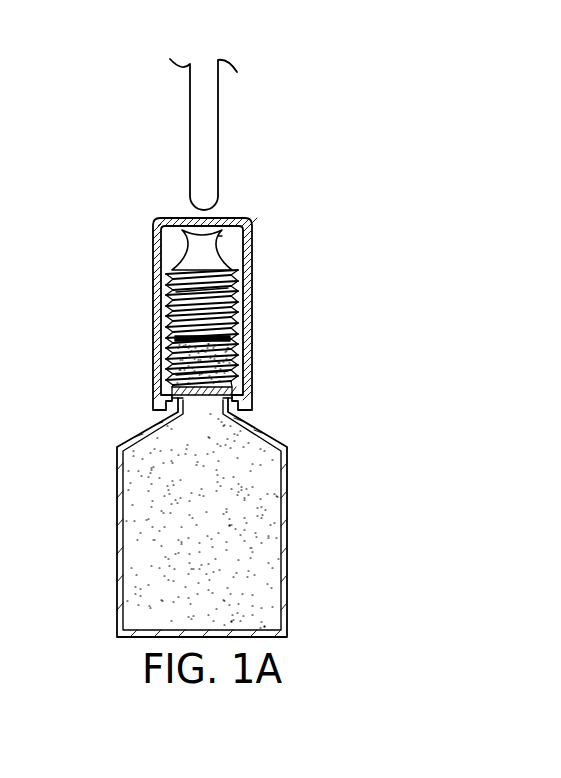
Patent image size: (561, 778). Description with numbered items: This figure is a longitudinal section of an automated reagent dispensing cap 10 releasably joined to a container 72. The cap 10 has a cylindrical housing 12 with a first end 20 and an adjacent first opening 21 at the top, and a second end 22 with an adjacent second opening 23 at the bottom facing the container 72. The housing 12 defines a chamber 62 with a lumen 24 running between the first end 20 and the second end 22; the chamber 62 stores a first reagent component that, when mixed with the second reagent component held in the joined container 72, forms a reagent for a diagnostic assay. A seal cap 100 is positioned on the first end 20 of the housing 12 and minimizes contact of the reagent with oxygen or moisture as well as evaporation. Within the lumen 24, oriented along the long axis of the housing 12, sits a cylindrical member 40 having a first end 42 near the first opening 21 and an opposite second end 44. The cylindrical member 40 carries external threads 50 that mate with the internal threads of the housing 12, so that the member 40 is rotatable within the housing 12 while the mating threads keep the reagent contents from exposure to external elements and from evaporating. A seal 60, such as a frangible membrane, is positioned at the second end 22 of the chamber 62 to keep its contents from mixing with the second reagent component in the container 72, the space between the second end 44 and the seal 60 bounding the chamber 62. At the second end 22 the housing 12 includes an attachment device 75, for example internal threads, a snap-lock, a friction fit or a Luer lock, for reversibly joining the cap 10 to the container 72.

The reagent dispensing cap 10 is at (66, 261).
The seal cap 100 is at (160, 221).
The cylindrical housing 12 is at (157, 291).
The first end 20 is at (285, 306).
The first end of cylindrical member 42 is at (216, 240).
The first opening 21 is at (236, 257).
The external threads 50 is at (222, 292).
The cylindrical member 40 is at (232, 311).
The second end of cylindrical member 44 is at (178, 340).
The lumen 24 is at (168, 376).
The chamber 62 is at (215, 383).
The attachment device 75 is at (165, 400).
The second end 22 is at (254, 412).
The second opening 23 is at (207, 424).
The seal 60 is at (290, 514).
The container 72 is at (120, 574).